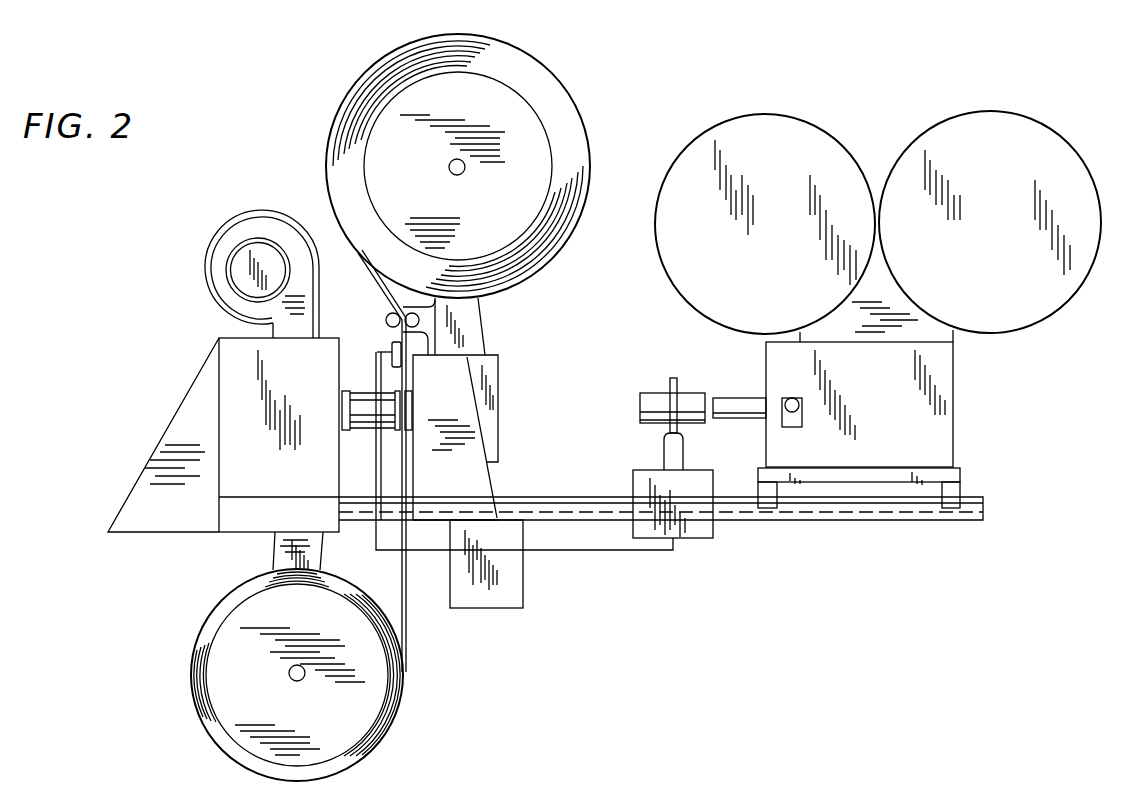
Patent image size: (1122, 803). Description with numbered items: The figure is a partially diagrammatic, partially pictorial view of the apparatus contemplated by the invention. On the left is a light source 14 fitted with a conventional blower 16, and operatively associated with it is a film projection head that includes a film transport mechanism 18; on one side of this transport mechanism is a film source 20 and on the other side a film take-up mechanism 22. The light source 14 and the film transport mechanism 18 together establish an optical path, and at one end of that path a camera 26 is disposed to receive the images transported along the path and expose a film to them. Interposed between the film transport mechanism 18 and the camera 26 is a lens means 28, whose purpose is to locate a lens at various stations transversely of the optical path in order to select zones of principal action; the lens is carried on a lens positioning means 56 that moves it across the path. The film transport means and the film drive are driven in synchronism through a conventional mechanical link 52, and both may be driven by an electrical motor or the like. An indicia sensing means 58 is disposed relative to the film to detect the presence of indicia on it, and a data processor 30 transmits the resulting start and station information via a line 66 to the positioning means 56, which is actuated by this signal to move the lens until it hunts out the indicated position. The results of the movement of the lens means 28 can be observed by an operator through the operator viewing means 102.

The light source 14 is at (247, 385).
The blower 16 is at (243, 247).
The film transport mechanism 18 is at (456, 482).
The film source 20 is at (415, 182).
The film take-up mechanism 22 is at (305, 716).
The camera 26 is at (905, 440).
The lens means 28 is at (658, 392).
The data processor 30 is at (461, 600).
The mechanical link 52 is at (727, 517).
The lens positioning means 56 is at (690, 538).
The indicia sensing means 58 is at (388, 344).
The line 66 is at (563, 552).
The operator viewing means 102 is at (802, 408).